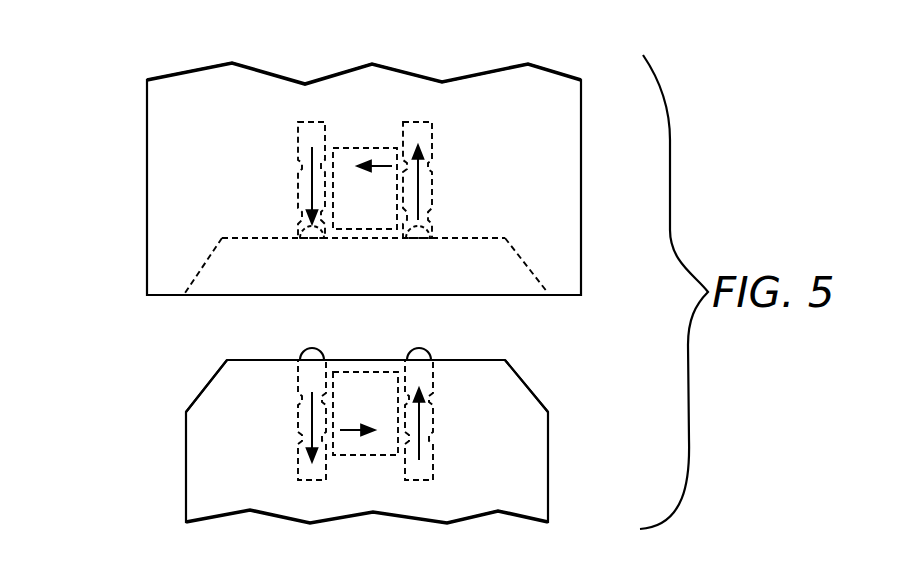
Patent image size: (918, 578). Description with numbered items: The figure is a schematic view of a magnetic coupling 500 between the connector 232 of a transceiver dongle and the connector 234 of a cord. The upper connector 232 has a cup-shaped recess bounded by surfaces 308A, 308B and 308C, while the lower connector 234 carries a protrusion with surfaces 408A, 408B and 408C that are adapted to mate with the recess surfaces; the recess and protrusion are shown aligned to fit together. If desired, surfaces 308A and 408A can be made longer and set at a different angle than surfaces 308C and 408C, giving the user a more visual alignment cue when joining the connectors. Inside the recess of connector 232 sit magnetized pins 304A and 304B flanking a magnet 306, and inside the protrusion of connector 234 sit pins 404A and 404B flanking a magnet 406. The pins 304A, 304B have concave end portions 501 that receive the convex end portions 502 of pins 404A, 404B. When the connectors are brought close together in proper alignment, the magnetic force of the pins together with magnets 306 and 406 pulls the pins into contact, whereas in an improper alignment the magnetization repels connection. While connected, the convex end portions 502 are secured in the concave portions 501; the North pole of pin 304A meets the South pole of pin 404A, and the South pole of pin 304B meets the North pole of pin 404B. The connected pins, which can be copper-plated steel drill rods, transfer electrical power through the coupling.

The connector 232 is at (591, 206).
The connector 234 is at (551, 436).
The pin 304A is at (298, 122).
The pin 304B is at (428, 122).
The magnet 306 is at (360, 148).
The surface 308A is at (192, 293).
The surface 308B is at (252, 241).
The surface 308C is at (525, 275).
The pin 404A is at (300, 482).
The pin 404B is at (433, 481).
The magnet 406 is at (362, 456).
The surface 408A is at (192, 410).
The surface 408B is at (242, 360).
The surface 408C is at (533, 392).
The magnetic coupling 500 is at (122, 346).
The concave end portion 501 is at (312, 234).
The convex end portion 502 is at (310, 349).